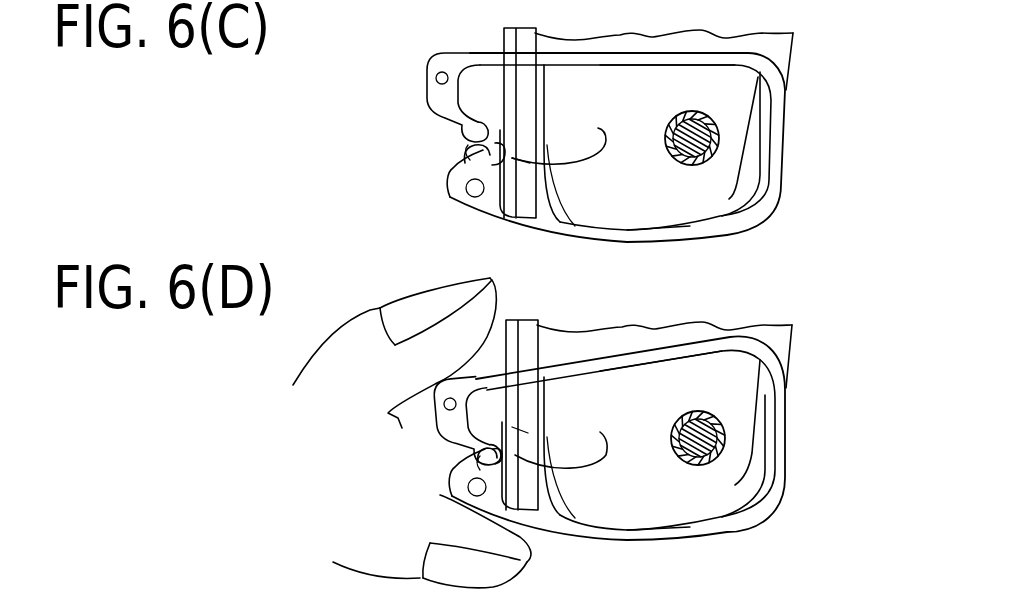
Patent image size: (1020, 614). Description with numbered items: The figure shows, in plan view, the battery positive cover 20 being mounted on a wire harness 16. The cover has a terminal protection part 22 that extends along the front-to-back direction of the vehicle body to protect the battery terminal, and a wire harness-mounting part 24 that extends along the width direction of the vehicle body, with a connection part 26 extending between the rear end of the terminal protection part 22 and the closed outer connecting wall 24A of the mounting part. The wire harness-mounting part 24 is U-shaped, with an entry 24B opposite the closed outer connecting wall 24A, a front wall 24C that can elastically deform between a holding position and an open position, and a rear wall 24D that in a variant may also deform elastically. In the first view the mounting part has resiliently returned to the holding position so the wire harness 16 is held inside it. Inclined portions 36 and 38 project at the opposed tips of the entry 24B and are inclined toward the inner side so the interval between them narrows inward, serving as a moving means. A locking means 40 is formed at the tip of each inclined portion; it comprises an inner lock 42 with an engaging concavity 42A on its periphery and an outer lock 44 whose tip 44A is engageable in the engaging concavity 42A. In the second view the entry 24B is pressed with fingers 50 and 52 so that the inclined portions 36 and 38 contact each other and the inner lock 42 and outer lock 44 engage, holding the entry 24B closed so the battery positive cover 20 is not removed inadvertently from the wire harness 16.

In FIG. 6C, the wire harness 16 is at (673, 158).
In FIG. 6D, the wire harness 16 is at (678, 456).
In FIG. 6C, the battery positive cover 20 is at (644, 136).
In FIG. 6D, the battery positive cover 20 is at (619, 435).
In FIG. 6C, the terminal protection part 22 is at (798, 40).
In FIG. 6D, the terminal protection part 22 is at (797, 333).
In FIG. 6C, the wire harness-mounting part 24 is at (619, 151).
In FIG. 6D, the wire harness-mounting part 24 is at (594, 449).
In FIG. 6C, the closed outer connecting wall 24A is at (737, 163).
In FIG. 6D, the closed outer connecting wall 24A is at (773, 438).
In FIG. 6C, the entry 24B is at (456, 148).
In FIG. 6D, the entry 24B is at (463, 450).
In FIG. 6C, the front wall 24C is at (650, 78).
In FIG. 6D, the front wall 24C is at (672, 356).
In FIG. 6C, the rear wall 24D is at (653, 230).
In FIG. 6D, the rear wall 24D is at (655, 530).
In FIG. 6C, the connection part 26 is at (788, 88).
In FIG. 6D, the connection part 26 is at (790, 388).
In FIG. 6C, the inclined portion 36 is at (468, 121).
In FIG. 6D, the inclined portion 36 is at (460, 426).
In FIG. 6C, the inclined portion 38 is at (452, 168).
In FIG. 6D, the inclined portion 38 is at (450, 492).
In FIG. 6C, the locking means 40 is at (570, 156).
In FIG. 6D, the locking means 40 is at (578, 445).
In FIG. 6C, the inner lock 42 is at (546, 126).
In FIG. 6D, the inner lock 42 is at (556, 423).
In FIG. 6C, the engaging concavity 42A is at (470, 138).
In FIG. 6D, the engaging concavity 42A is at (513, 453).
In FIG. 6C, the outer lock 44 is at (570, 169).
In FIG. 6D, the outer lock 44 is at (575, 460).
In FIG. 6C, the tip 44A is at (510, 159).
In FIG. 6D, the tip 44A is at (512, 427).
In FIG. 6D, the finger 50 is at (497, 281).
In FIG. 6D, the finger 52 is at (531, 552).